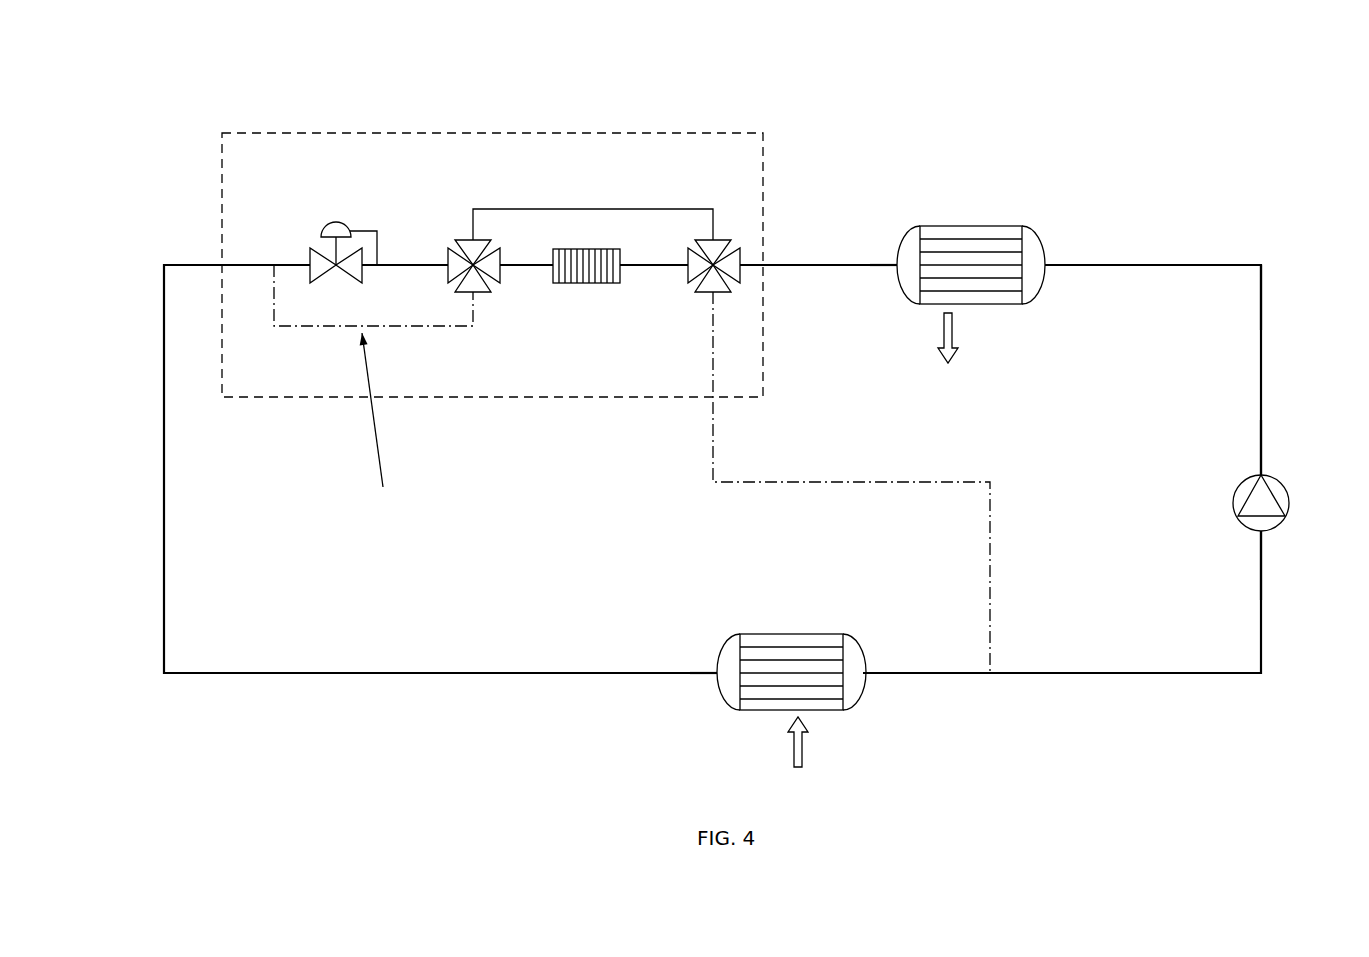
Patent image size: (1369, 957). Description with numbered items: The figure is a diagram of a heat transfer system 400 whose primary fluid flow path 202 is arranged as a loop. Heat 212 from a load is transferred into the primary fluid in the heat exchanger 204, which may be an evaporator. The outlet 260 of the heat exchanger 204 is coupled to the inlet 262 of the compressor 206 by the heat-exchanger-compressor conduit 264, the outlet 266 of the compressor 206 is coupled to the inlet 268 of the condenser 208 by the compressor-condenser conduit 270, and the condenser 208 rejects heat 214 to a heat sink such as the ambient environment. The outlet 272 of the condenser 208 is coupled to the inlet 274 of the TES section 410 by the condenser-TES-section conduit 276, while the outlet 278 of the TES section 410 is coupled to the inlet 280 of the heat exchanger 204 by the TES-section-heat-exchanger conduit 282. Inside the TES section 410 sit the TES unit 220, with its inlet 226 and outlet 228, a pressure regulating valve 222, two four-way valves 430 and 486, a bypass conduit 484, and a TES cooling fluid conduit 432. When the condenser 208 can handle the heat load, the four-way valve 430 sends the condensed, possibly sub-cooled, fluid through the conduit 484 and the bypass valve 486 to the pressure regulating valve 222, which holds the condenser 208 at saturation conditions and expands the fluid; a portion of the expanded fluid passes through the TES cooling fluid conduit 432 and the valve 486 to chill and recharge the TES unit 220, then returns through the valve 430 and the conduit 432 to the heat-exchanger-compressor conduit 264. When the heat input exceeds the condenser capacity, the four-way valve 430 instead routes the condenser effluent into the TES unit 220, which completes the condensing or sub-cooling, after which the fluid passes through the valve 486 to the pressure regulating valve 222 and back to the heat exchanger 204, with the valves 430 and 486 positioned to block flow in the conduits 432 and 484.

The heat transfer system 400 is at (1234, 142).
The primary fluid flow path 202 is at (1282, 745).
The heat exchanger 204 is at (792, 630).
The compressor 206 is at (1292, 503).
The condenser 208 is at (970, 224).
The heat 212 is at (816, 745).
The heat 214 is at (971, 340).
The TES unit 220 is at (590, 295).
The pressure regulating valve 222 is at (292, 237).
The inlet 226 is at (628, 287).
The outlet 228 is at (548, 287).
The outlet 260 is at (868, 660).
The inlet 262 is at (1250, 540).
The heat-exchanger-compressor conduit 264 is at (1095, 677).
The outlet 266 is at (1255, 472).
The inlet 268 is at (1052, 272).
The compressor-condenser conduit 270 is at (1266, 277).
The outlet 272 is at (888, 278).
The inlet 274 is at (772, 273).
The condenser-TES-section conduit 276 is at (834, 262).
The outlet 278 is at (215, 278).
The inlet 280 is at (713, 665).
The TES-section-heat-exchanger conduit 282 is at (292, 675).
The TES section 410 is at (270, 400).
The four-way valve 430 is at (680, 238).
The TES cooling fluid conduit 432 is at (705, 483).
The conduit 484 is at (506, 208).
The four-way valve 486 is at (440, 230).